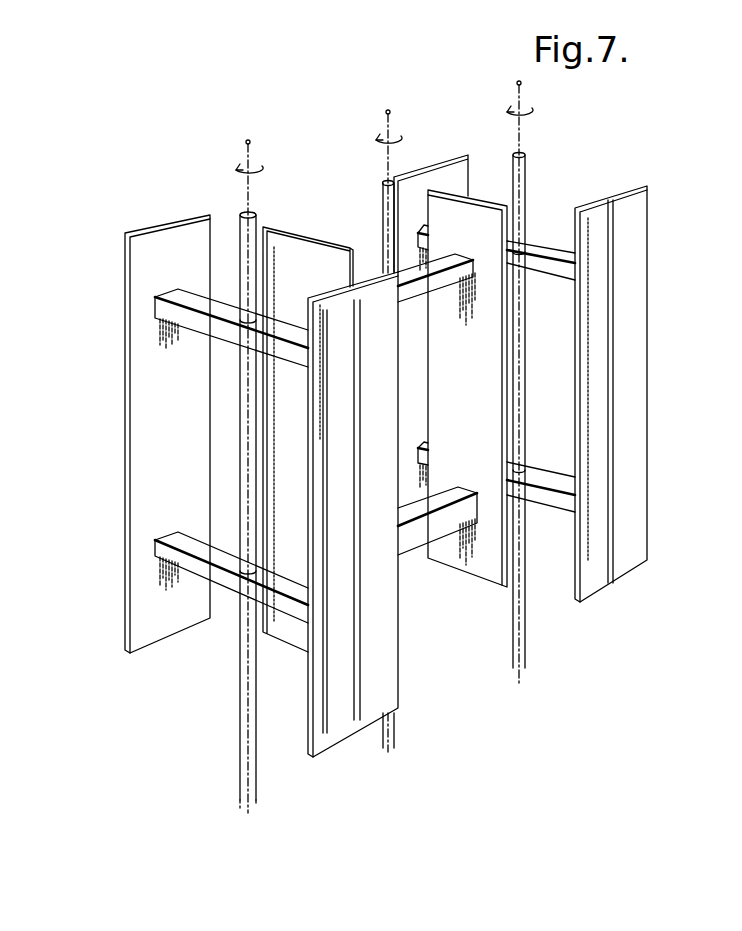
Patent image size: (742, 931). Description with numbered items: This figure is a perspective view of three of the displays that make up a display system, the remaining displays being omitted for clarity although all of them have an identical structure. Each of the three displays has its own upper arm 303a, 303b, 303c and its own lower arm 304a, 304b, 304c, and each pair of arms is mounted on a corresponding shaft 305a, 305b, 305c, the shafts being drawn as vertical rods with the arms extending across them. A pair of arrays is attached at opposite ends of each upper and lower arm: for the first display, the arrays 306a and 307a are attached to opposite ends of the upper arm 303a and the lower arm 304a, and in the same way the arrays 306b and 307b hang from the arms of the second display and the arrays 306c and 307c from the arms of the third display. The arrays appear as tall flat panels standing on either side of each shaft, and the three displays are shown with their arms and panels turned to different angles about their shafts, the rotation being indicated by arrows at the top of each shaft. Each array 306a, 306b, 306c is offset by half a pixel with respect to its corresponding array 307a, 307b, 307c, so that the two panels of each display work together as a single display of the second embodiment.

The upper arm 303a is at (170, 306).
The upper arm 303b is at (420, 277).
The upper arm 303c is at (550, 252).
The lower arm 304a is at (225, 572).
The lower arm 304b is at (418, 528).
The lower arm 304c is at (570, 500).
The shaft 305a is at (245, 768).
The shaft 305b is at (392, 732).
The shaft 305c is at (524, 658).
The array 306a is at (152, 465).
The array 306b is at (300, 262).
The array 306c is at (440, 178).
The array 307a is at (333, 718).
The array 307b is at (487, 548).
The array 307c is at (648, 375).